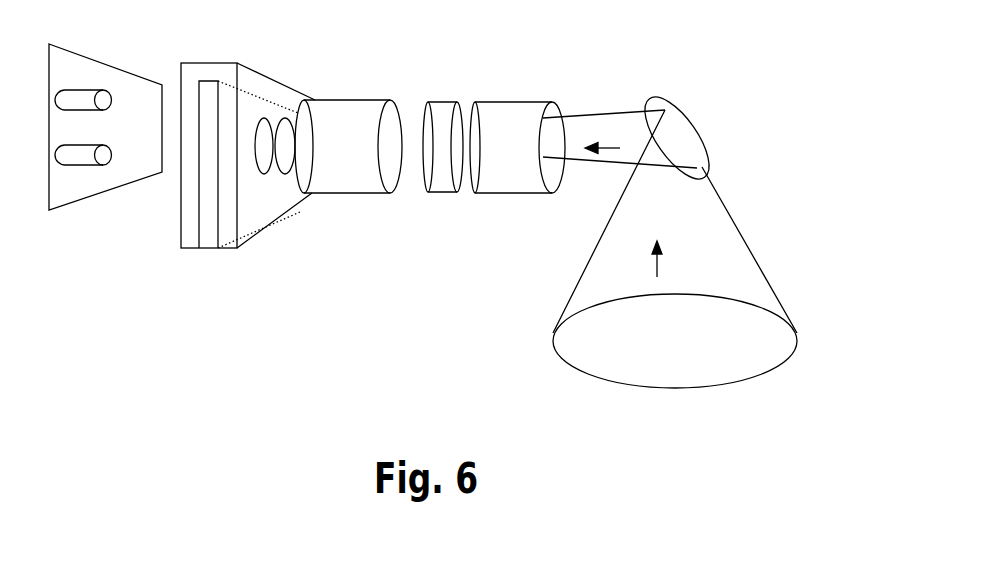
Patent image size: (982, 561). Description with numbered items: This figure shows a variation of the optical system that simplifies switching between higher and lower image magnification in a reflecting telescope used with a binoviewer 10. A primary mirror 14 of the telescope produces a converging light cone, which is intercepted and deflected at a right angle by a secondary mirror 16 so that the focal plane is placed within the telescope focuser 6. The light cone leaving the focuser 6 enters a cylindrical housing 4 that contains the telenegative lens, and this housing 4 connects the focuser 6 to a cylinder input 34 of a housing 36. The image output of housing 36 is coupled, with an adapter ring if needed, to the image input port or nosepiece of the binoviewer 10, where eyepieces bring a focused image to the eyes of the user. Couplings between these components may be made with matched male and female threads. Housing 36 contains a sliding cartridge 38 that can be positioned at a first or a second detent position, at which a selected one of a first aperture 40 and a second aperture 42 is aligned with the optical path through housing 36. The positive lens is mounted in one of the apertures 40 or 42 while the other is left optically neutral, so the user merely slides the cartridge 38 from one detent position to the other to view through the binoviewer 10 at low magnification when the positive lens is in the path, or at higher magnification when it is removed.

The binoviewer 10 is at (118, 258).
The housing 36 is at (181, 248).
The sliding cartridge 38 is at (208, 248).
The second aperture 42 is at (266, 175).
The first aperture 40 is at (287, 175).
The cylinder input 34 is at (377, 195).
The housing 4 is at (443, 193).
The focuser 6 is at (520, 193).
The secondary mirror 16 is at (702, 138).
The primary mirror 14 is at (706, 249).